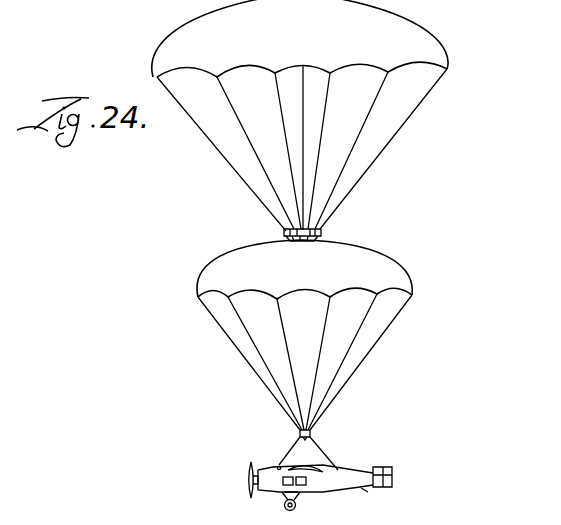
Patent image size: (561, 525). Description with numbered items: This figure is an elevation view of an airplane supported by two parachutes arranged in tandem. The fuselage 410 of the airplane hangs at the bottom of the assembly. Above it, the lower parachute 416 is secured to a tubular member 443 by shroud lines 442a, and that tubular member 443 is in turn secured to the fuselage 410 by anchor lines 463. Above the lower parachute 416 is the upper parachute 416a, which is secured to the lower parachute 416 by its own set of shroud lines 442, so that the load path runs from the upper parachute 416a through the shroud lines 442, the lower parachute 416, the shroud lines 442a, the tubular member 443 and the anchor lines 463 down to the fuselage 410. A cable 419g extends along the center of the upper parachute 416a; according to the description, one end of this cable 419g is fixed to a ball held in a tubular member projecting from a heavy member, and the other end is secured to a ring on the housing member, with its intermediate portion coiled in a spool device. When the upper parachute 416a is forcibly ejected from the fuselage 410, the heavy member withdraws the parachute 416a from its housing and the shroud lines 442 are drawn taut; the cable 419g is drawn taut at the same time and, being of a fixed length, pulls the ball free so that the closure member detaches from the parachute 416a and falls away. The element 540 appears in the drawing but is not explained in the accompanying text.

The upper parachute canopy 416a is at (442, 53).
The central line 419g is at (301, 128).
The upper parachute shroud lines 442 is at (383, 156).
The connector / load attachment 443 is at (313, 432).
The lower parachute canopy 416 is at (385, 273).
The lower parachute shroud lines 442a is at (404, 307).
The attachment lines 463 is at (320, 448).
The airplane 410 is at (355, 473).
The element 540 is at (346, 521).